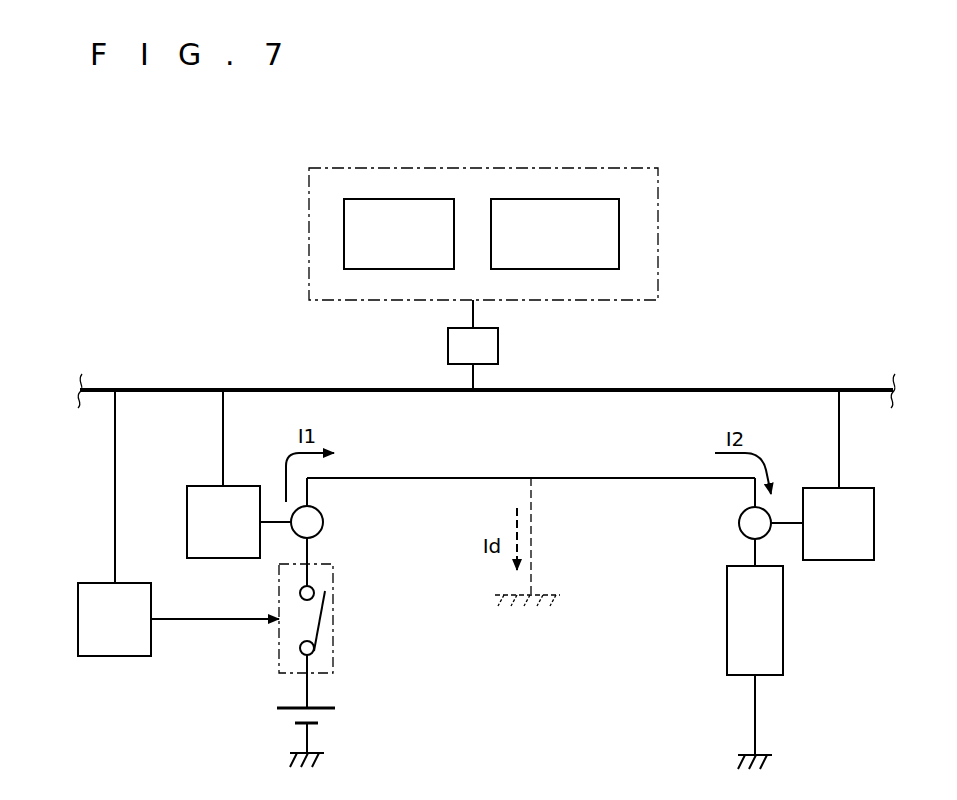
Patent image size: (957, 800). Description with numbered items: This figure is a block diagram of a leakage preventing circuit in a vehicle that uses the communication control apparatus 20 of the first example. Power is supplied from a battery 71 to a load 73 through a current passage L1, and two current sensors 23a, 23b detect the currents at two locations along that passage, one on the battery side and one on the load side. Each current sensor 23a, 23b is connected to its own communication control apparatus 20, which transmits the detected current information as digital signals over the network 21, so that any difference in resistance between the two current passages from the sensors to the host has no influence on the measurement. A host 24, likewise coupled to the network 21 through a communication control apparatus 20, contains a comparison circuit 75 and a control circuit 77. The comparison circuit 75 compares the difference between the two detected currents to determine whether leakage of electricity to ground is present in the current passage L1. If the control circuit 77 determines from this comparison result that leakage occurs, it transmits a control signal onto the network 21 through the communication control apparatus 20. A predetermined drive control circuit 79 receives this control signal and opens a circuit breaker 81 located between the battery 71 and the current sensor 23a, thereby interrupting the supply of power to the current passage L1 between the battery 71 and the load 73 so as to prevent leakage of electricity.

The communication control apparatus 20 is at (498, 345).
The network 21 is at (680, 388).
The current sensor 23a is at (324, 522).
The current sensor 23b is at (739, 523).
The host 24 is at (537, 205).
The battery 71 is at (340, 712).
The load 73 is at (727, 617).
The comparison circuit 75 is at (511, 199).
The control circuit 77 is at (431, 199).
The drive control circuit 79 is at (115, 656).
The circuit breaker 81 is at (333, 619).
The current passage L1 is at (590, 478).